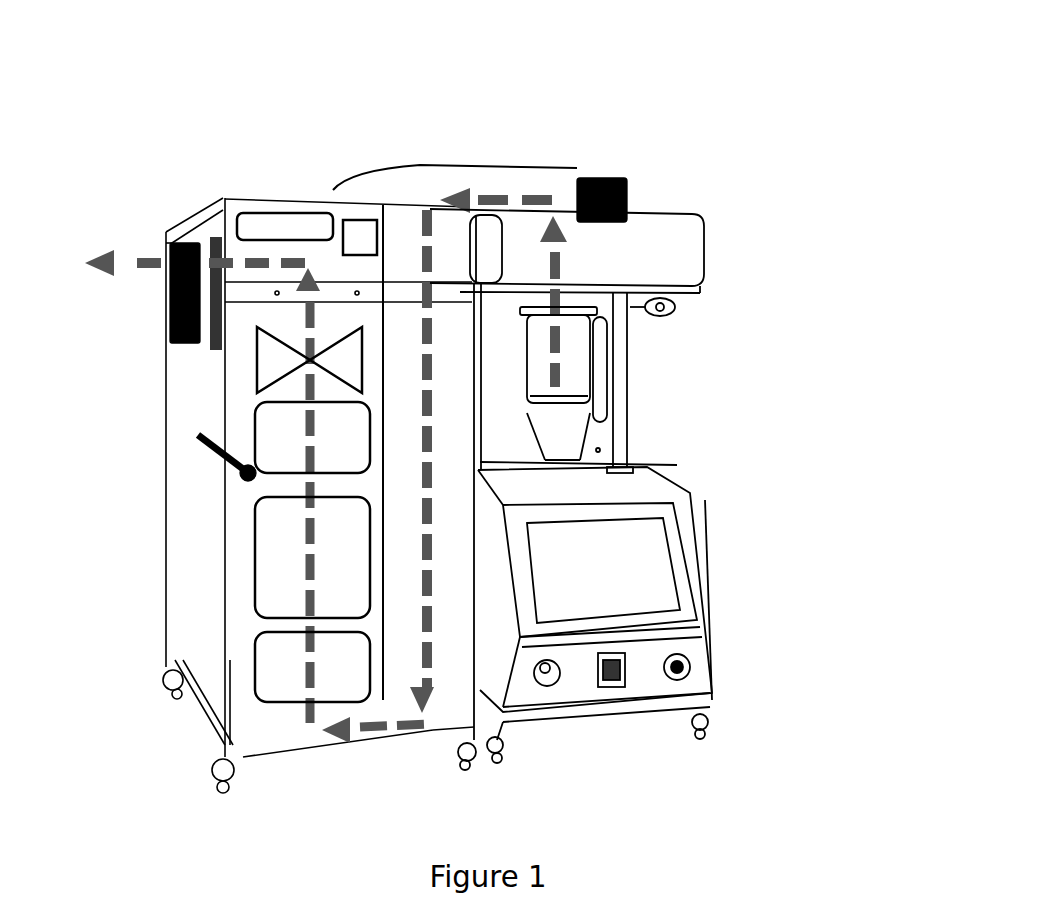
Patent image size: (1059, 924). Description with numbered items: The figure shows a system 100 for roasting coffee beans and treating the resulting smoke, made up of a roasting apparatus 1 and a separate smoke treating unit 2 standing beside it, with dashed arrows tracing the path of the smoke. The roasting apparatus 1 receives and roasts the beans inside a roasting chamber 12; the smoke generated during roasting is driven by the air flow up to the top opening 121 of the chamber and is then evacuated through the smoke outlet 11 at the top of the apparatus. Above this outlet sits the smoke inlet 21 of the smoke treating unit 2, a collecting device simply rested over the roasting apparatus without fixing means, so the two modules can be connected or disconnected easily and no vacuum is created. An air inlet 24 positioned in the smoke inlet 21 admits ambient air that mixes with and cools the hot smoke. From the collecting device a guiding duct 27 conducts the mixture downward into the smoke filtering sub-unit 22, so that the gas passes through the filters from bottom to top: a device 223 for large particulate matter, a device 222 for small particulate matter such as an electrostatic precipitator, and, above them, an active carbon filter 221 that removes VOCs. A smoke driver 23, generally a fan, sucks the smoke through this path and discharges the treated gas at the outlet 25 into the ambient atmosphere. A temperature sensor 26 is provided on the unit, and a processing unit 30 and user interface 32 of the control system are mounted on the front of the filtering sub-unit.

The system 100 is at (758, 97).
The roasting apparatus 1 is at (780, 222).
The smoke treating unit 2 is at (134, 110).
The smoke outlet 11 is at (562, 213).
The roasting chamber 12 is at (563, 383).
The top opening 121 is at (582, 292).
The smoke inlet 21 is at (550, 183).
The smoke filtering sub-unit 22 is at (160, 426).
The active carbon filter 221 is at (312, 437).
The small particulate matter filter 222 is at (312, 557).
The large particulate matter filter 223 is at (312, 667).
The smoke driver 23 is at (258, 352).
The air inlet 24 is at (632, 180).
The outlet 25 is at (165, 300).
The temperature sensor 26 is at (198, 435).
The guiding duct 27 is at (395, 236).
The processing unit 30 is at (350, 222).
The user interface 32 is at (255, 224).